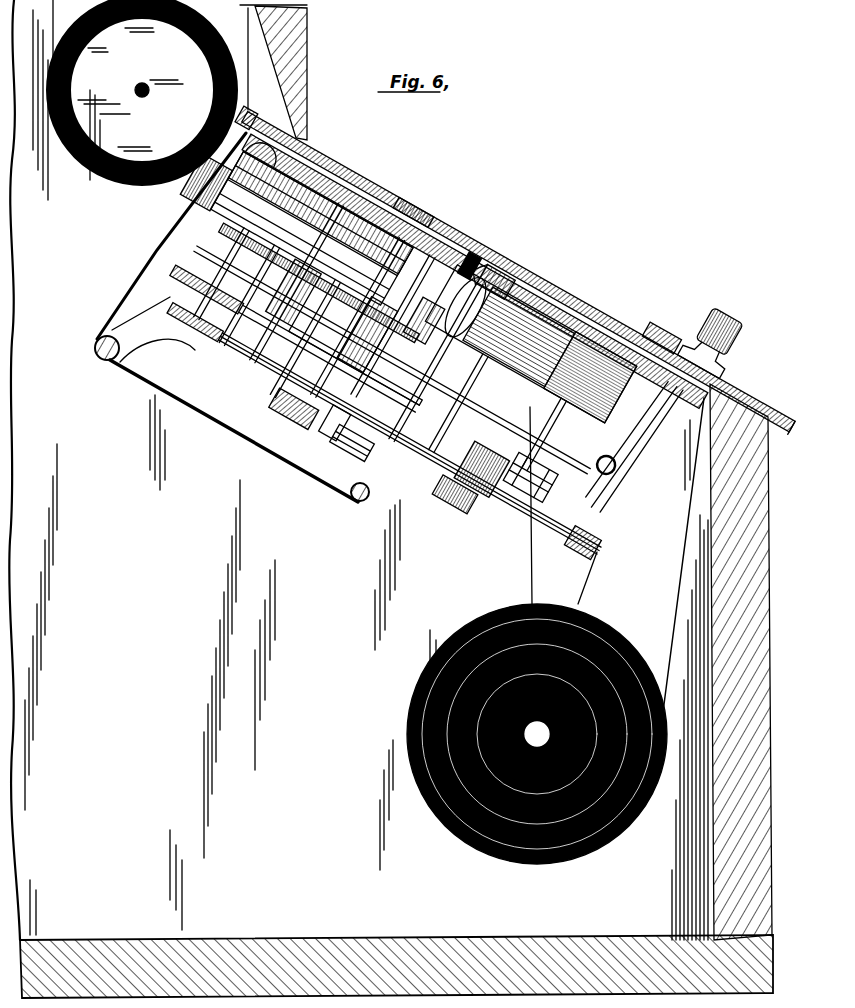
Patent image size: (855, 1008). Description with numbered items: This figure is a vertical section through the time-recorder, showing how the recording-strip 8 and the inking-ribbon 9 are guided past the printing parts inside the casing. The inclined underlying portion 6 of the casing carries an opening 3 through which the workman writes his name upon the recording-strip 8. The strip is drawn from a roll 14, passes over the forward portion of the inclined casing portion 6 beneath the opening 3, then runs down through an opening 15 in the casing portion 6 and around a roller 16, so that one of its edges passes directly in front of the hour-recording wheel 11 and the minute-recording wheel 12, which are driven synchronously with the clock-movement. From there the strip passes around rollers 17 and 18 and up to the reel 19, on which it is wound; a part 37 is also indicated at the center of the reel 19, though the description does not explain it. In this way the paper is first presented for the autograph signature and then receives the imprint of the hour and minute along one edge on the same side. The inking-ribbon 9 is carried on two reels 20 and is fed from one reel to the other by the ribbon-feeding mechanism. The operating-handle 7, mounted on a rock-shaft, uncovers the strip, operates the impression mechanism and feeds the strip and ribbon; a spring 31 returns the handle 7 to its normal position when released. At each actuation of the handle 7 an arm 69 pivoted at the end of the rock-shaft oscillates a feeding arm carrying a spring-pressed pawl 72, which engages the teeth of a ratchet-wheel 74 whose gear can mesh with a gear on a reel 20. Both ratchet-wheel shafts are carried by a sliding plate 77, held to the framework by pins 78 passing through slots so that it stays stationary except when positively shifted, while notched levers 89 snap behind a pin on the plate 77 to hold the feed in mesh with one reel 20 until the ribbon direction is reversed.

The opening 3 is at (475, 271).
The underlying portion of the casing 6 is at (516, 270).
The operating-handle 7 is at (661, 338).
The recording-strip 8 is at (230, 428).
The inking-ribbon 9 is at (525, 354).
The hour-recording wheel 11 is at (301, 213).
The minute-recording wheel 12 is at (413, 212).
The roll 14 is at (408, 729).
The opening 15 is at (469, 266).
The roller 16 is at (491, 281).
The roller 17 is at (361, 502).
The roller 18 is at (106, 362).
The reel 19 is at (99, 154).
The reel 20 is at (578, 391).
The spring 31 is at (638, 463).
The hub 37 is at (175, 27).
The arm 69 is at (452, 509).
The spring-pressed pawl 72 is at (471, 459).
The ratchet-wheel 74 is at (516, 503).
The sliding plate 77 is at (346, 381).
The pin 78 is at (284, 426).
The lever 89 is at (338, 457).